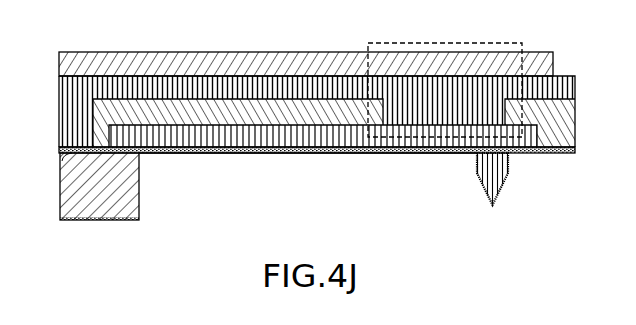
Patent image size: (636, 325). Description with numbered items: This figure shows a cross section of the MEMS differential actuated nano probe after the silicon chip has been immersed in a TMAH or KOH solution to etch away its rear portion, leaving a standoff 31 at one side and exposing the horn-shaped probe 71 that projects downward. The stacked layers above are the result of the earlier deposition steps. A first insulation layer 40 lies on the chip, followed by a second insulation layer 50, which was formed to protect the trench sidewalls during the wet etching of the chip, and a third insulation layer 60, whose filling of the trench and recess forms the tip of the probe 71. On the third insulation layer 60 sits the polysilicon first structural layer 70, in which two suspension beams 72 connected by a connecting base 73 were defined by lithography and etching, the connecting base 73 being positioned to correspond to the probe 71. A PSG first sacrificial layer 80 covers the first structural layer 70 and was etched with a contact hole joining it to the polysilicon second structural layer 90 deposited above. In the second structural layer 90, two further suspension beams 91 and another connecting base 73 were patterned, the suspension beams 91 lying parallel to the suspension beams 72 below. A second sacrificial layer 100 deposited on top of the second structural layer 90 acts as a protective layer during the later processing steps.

The second sacrificial layer 100 is at (330, 62).
The suspension beams 91 is at (228, 83).
The second structural layer 90 is at (562, 75).
The first sacrificial layer 80 is at (563, 107).
The first structural layer 70 is at (538, 135).
The connecting base 73 is at (484, 43).
The suspension beams 72 is at (273, 150).
The tip of the probe 71 is at (485, 182).
The third insulation layer 60 is at (59, 147).
The second insulation layer 50 is at (59, 150).
The first insulation layer 40 is at (61, 162).
The standoff 31 is at (62, 190).